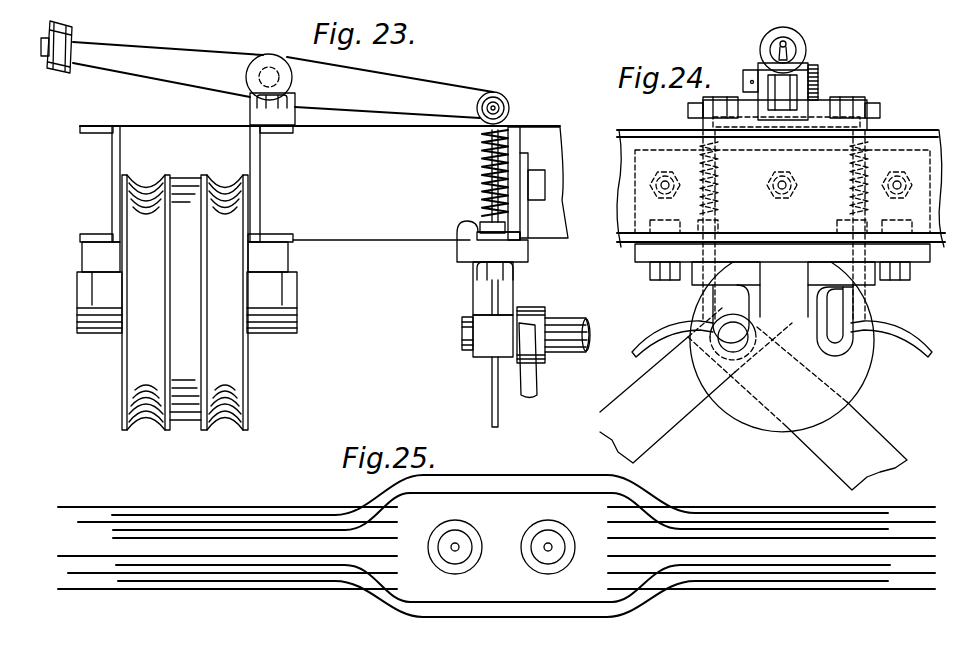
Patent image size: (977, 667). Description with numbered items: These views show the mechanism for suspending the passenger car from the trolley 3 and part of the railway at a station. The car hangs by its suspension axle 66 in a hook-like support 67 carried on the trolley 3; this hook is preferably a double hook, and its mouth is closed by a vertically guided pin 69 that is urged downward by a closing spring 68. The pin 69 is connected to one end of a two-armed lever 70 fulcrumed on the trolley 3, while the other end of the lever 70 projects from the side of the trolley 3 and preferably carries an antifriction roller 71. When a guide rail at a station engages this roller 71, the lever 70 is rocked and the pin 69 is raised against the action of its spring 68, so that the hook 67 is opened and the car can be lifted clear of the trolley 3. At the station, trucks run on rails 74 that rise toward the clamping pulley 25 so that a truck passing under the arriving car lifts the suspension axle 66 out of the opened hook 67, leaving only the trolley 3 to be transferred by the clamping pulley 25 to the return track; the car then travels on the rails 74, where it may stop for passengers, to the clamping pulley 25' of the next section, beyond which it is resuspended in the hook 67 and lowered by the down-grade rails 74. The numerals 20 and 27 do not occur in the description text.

In FIG. 23, the trolley 3 is at (345, 232).
In FIG. 24, the trolley 3 is at (935, 148).
In FIG. 25, the cable strands 20 is at (582, 522).
In FIG. 25, the clamping pulley 25 is at (468, 550).
In FIG. 25, the clamping pulley of the other section 25' is at (548, 581).
In FIG. 25, the wire strands 27 is at (270, 538).
In FIG. 23, the suspension axle 66 is at (563, 322).
In FIG. 24, the suspension axle 66 is at (742, 338).
In FIG. 23, the hook-like support 67 is at (478, 335).
In FIG. 24, the hook-like support 67 is at (650, 338).
In FIG. 23, the closing spring 68 is at (482, 168).
In FIG. 24, the closing spring 68 is at (719, 197).
In FIG. 23, the vertically guided pin 69 is at (492, 296).
In FIG. 24, the vertically guided pin 69 is at (707, 298).
In FIG. 23, the two-armed lever 70 is at (180, 52).
In FIG. 24, the two-armed lever 70 is at (797, 84).
In FIG. 23, the antifriction roller 71 is at (73, 25).
In FIG. 24, the antifriction roller 71 is at (805, 42).
In FIG. 25, the rails 74 is at (483, 493).